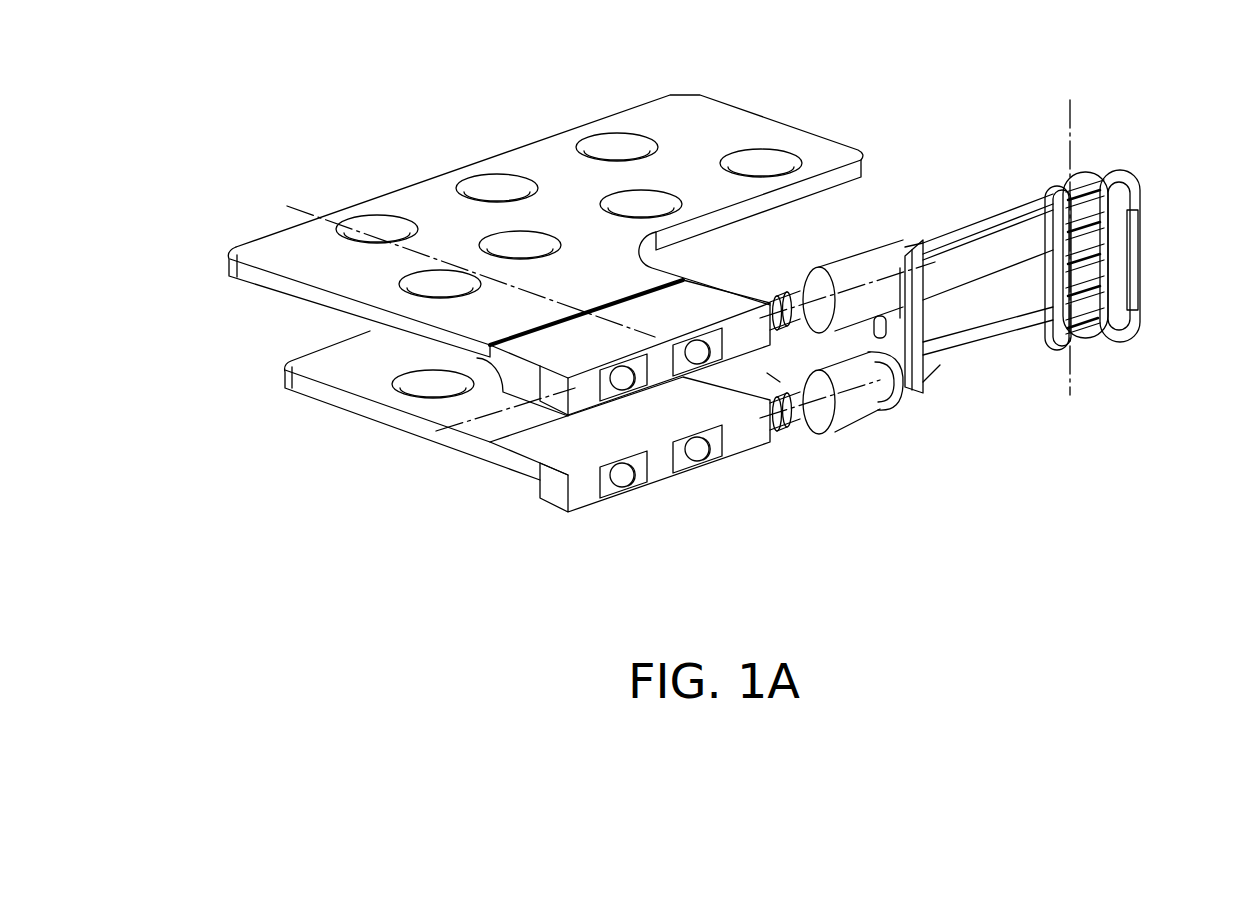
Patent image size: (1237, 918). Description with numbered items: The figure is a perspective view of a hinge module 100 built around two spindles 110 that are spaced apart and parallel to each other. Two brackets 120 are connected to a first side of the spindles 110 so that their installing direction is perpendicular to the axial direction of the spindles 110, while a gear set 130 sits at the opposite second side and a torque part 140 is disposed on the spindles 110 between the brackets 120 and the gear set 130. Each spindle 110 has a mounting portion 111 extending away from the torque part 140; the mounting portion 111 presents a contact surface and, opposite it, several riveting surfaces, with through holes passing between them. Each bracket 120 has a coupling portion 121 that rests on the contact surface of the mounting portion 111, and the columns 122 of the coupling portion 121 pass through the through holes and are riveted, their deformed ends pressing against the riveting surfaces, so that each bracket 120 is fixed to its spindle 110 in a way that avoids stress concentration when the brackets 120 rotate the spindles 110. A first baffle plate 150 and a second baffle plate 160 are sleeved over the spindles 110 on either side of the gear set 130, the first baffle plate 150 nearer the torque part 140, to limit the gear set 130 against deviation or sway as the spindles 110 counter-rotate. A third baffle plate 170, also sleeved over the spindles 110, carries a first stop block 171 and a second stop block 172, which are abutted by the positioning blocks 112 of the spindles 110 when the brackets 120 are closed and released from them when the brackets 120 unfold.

The hinge module 100 is at (1176, 596).
The spindle 110 is at (818, 384).
The mounting portion 111 is at (553, 402).
The positioning block 112 is at (849, 410).
The bracket 120 is at (372, 297).
The coupling portion 121 is at (500, 390).
The column 122 is at (704, 464).
The gear set 130 is at (1097, 190).
The torque part 140 is at (978, 250).
The first baffle plate 150 is at (1058, 352).
The second baffle plate 160 is at (1122, 327).
The third baffle plate 170 is at (926, 397).
The first stop block 171 is at (868, 258).
The second stop block 172 is at (918, 410).